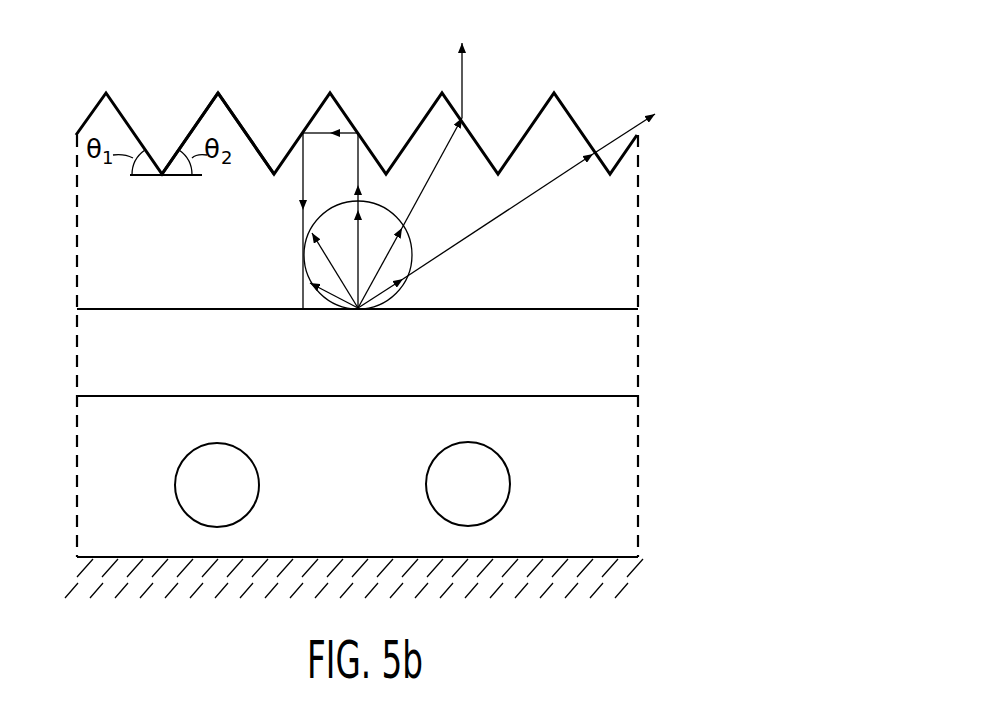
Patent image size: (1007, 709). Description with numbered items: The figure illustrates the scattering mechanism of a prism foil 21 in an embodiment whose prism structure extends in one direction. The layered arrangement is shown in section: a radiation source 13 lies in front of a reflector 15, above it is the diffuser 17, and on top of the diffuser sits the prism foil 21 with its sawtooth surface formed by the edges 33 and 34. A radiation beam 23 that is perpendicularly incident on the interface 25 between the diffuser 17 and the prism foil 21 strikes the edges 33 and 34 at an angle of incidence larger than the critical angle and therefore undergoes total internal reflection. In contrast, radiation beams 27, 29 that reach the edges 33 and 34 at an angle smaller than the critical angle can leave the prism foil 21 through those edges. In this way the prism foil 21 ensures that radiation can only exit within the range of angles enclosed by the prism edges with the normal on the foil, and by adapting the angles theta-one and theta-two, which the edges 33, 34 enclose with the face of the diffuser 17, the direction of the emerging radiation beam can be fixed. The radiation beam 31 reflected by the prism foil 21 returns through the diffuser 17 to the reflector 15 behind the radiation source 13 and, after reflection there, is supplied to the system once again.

The radiation source 13 is at (625, 505).
The reflector 15 is at (593, 557).
The diffuser 17 is at (627, 362).
The prism foil 21 is at (625, 260).
The radiation beam 23 is at (360, 231).
The interface 25 is at (507, 309).
The radiation beam 27 is at (518, 202).
The radiation beam 29 is at (429, 178).
The radiation beam 31 is at (303, 289).
The edge 33 is at (240, 120).
The edge 34 is at (196, 120).